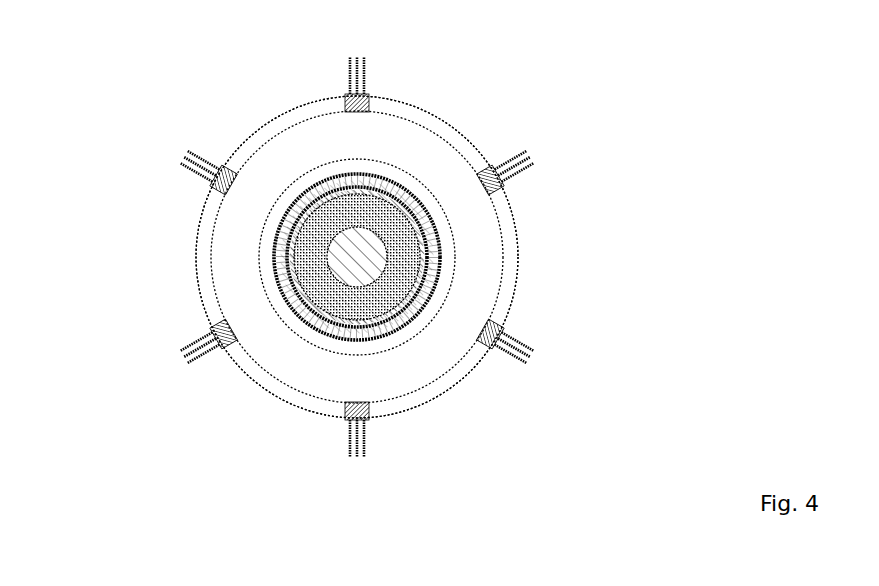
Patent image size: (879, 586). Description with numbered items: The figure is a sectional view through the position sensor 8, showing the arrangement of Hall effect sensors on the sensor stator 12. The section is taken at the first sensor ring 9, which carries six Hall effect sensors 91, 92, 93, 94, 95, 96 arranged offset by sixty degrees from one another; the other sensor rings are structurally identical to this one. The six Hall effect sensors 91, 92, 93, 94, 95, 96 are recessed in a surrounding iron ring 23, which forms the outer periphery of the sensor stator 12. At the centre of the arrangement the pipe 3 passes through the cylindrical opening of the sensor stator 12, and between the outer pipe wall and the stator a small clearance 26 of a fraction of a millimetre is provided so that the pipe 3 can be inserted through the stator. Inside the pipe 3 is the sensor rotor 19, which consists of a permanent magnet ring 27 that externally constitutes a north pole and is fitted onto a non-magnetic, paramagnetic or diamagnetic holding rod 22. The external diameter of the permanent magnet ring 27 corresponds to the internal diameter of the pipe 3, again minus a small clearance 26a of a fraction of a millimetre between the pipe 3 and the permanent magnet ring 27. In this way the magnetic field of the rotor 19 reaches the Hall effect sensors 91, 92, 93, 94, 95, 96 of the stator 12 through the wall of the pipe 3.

The position sensor 8 is at (143, 287).
The iron ring 23 is at (212, 302).
The sensor stator 12 is at (295, 157).
The first sensor ring 9 is at (232, 248).
The clearance 26 is at (402, 183).
The clearance 26a is at (405, 202).
The pipe 3 is at (432, 253).
The sensor rotor 19 is at (330, 290).
The permanent magnet ring 27 is at (390, 293).
The holding rod 22 is at (355, 268).
The Hall effect sensor 91 is at (368, 102).
The Hall effect sensor 92 is at (500, 187).
The Hall effect sensor 93 is at (497, 332).
The Hall effect sensor 94 is at (365, 420).
The Hall effect sensor 95 is at (226, 348).
The Hall effect sensor 96 is at (218, 183).